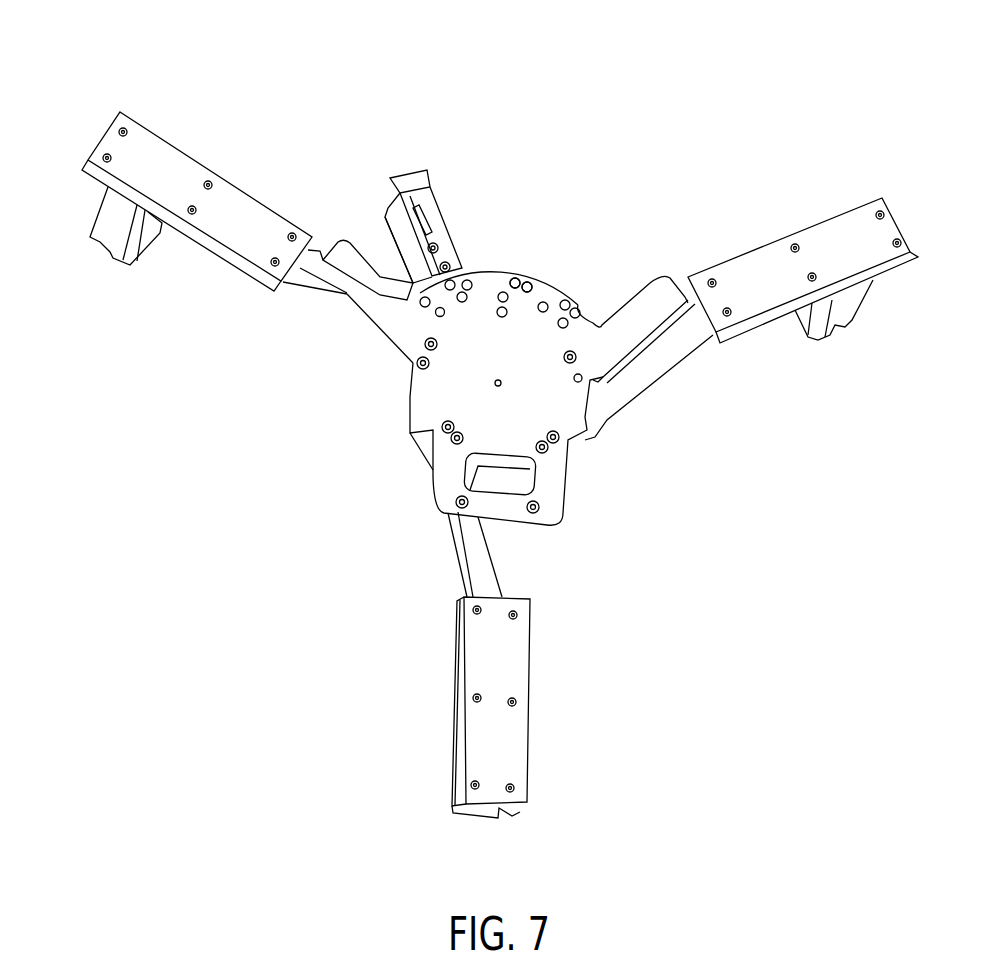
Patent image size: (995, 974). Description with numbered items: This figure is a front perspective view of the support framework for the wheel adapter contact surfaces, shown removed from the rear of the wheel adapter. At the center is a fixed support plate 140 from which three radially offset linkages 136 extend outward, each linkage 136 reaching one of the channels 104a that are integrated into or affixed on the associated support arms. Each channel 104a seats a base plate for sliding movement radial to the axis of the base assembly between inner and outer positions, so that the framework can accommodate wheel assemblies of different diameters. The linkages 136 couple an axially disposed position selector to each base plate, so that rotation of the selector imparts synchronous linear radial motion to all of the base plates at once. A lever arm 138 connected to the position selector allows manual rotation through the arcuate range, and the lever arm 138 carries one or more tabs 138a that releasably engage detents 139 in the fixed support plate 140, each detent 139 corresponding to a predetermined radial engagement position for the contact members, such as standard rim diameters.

The channel 104a is at (180, 158).
The radially offset linkage 136 is at (307, 272).
The lever arm 138 is at (412, 172).
The tab 138a is at (470, 287).
The detents 139 is at (520, 275).
The fixed support plate 140 is at (577, 410).